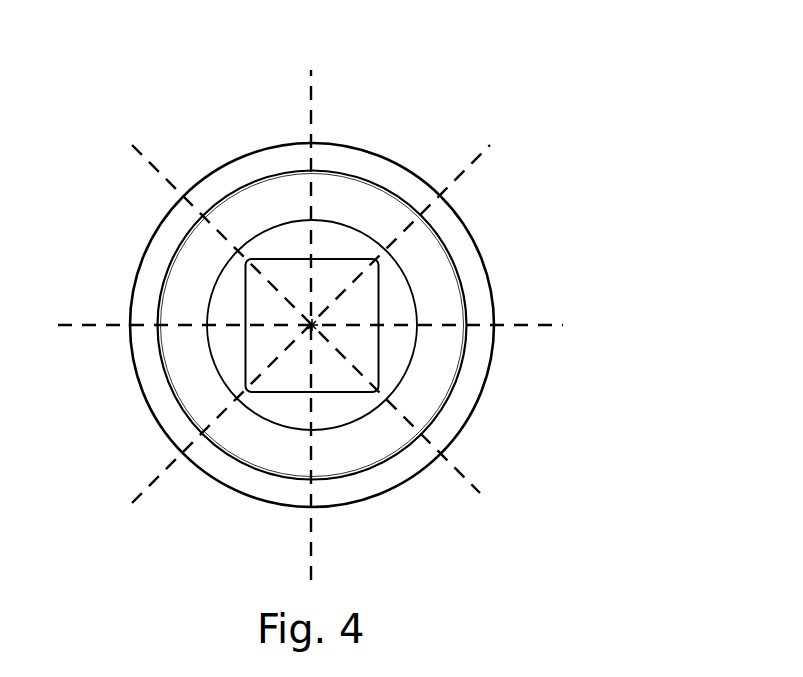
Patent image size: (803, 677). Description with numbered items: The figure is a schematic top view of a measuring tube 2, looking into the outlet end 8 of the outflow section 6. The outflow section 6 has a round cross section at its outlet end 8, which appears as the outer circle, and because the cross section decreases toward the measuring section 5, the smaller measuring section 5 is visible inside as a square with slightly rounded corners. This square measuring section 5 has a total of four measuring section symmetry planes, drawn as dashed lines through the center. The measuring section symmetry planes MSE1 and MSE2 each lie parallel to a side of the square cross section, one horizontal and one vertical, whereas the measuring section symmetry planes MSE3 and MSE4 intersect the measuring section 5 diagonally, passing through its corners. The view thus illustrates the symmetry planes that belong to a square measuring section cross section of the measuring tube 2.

The measuring tube 2 is at (472, 111).
The measuring section 5 is at (367, 305).
The outflow section 6 is at (156, 391).
The outlet end 8 is at (312, 325).
The measuring section symmetry plane MSE1 is at (563, 325).
The measuring section symmetry plane MSE2 is at (311, 70).
The measuring section symmetry plane MSE3 is at (490, 145).
The measuring section symmetry plane MSE4 is at (480, 493).